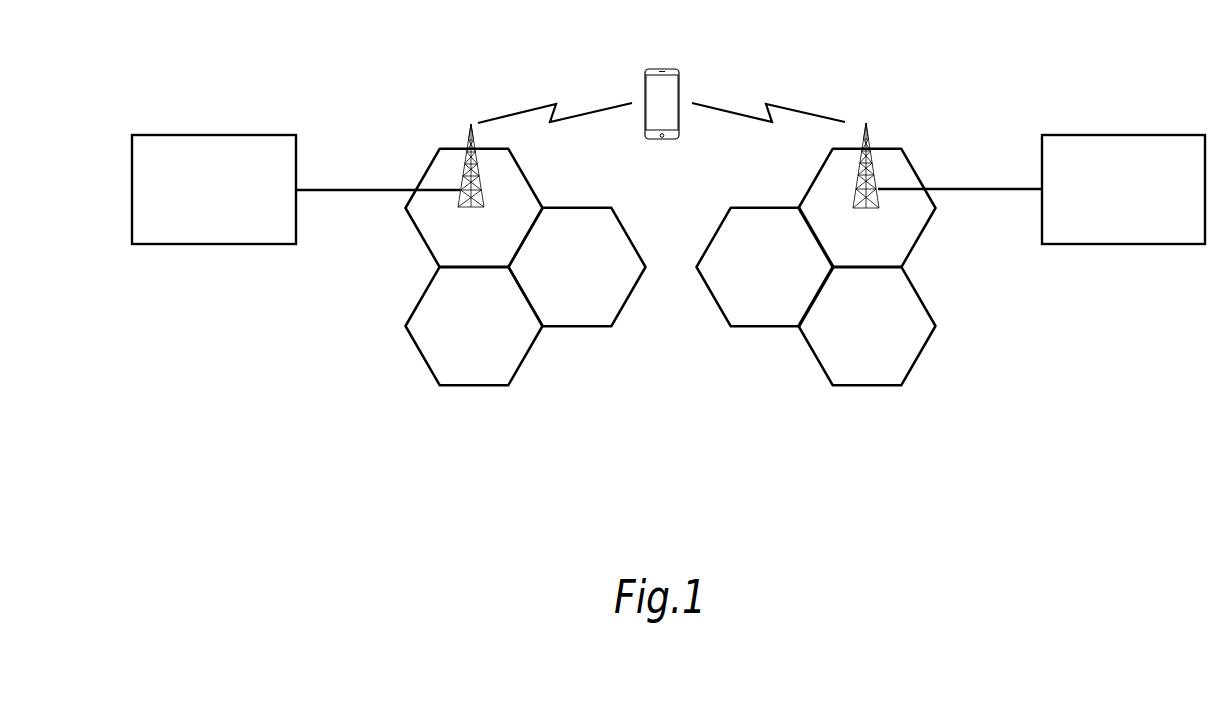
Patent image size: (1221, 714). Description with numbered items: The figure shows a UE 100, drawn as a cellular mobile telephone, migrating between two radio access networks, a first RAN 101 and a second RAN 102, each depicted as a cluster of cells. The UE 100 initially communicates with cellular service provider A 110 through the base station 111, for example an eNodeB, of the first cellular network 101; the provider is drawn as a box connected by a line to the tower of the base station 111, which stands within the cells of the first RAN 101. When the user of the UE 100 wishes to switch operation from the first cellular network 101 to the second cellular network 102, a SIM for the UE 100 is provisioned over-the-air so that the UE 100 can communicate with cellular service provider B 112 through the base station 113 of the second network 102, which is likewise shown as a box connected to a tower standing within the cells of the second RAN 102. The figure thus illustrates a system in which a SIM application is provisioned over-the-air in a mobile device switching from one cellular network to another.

The UE 100 is at (662, 69).
The first RAN 101 is at (480, 423).
The second RAN 102 is at (873, 423).
The cellular service provider A 110 is at (214, 135).
The base station 111 is at (533, 162).
The cellular service provider B 112 is at (1124, 135).
The base station 113 is at (930, 162).